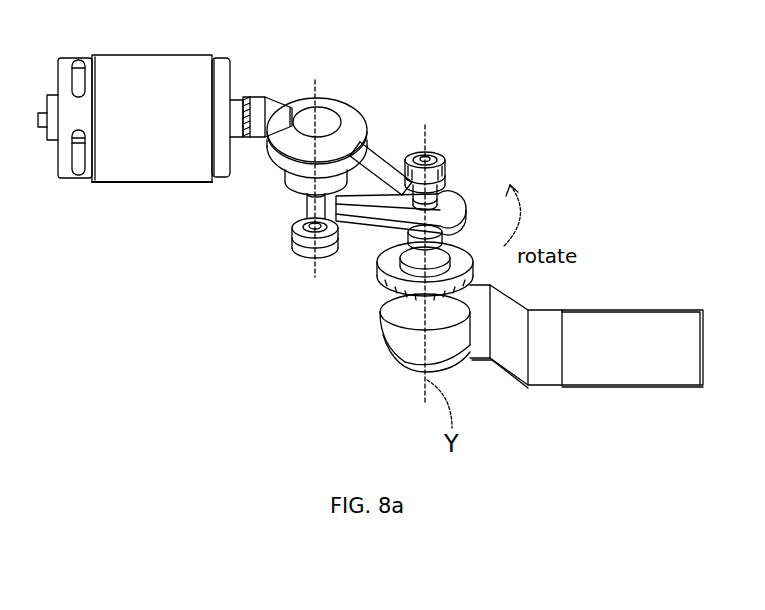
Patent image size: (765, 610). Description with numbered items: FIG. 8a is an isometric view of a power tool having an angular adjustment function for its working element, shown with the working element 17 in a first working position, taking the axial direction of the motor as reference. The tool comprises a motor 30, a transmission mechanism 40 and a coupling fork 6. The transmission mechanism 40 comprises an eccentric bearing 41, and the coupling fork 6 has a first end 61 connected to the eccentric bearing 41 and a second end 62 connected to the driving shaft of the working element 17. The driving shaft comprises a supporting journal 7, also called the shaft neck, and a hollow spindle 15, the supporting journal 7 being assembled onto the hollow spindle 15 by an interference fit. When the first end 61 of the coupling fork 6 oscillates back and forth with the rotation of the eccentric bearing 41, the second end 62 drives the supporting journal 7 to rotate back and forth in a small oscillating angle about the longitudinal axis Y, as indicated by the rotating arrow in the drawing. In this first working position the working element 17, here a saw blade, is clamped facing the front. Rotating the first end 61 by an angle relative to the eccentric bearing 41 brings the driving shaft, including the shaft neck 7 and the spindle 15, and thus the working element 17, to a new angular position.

The motor 30 is at (182, 155).
The transmission mechanism 40 is at (302, 95).
The eccentric bearing 41 is at (302, 195).
The supporting journal 7 is at (383, 238).
The coupling fork 6 is at (385, 160).
The first end 61 is at (382, 170).
The second end 62 is at (452, 193).
The hollow spindle 15 is at (385, 302).
The working element 17 is at (538, 387).